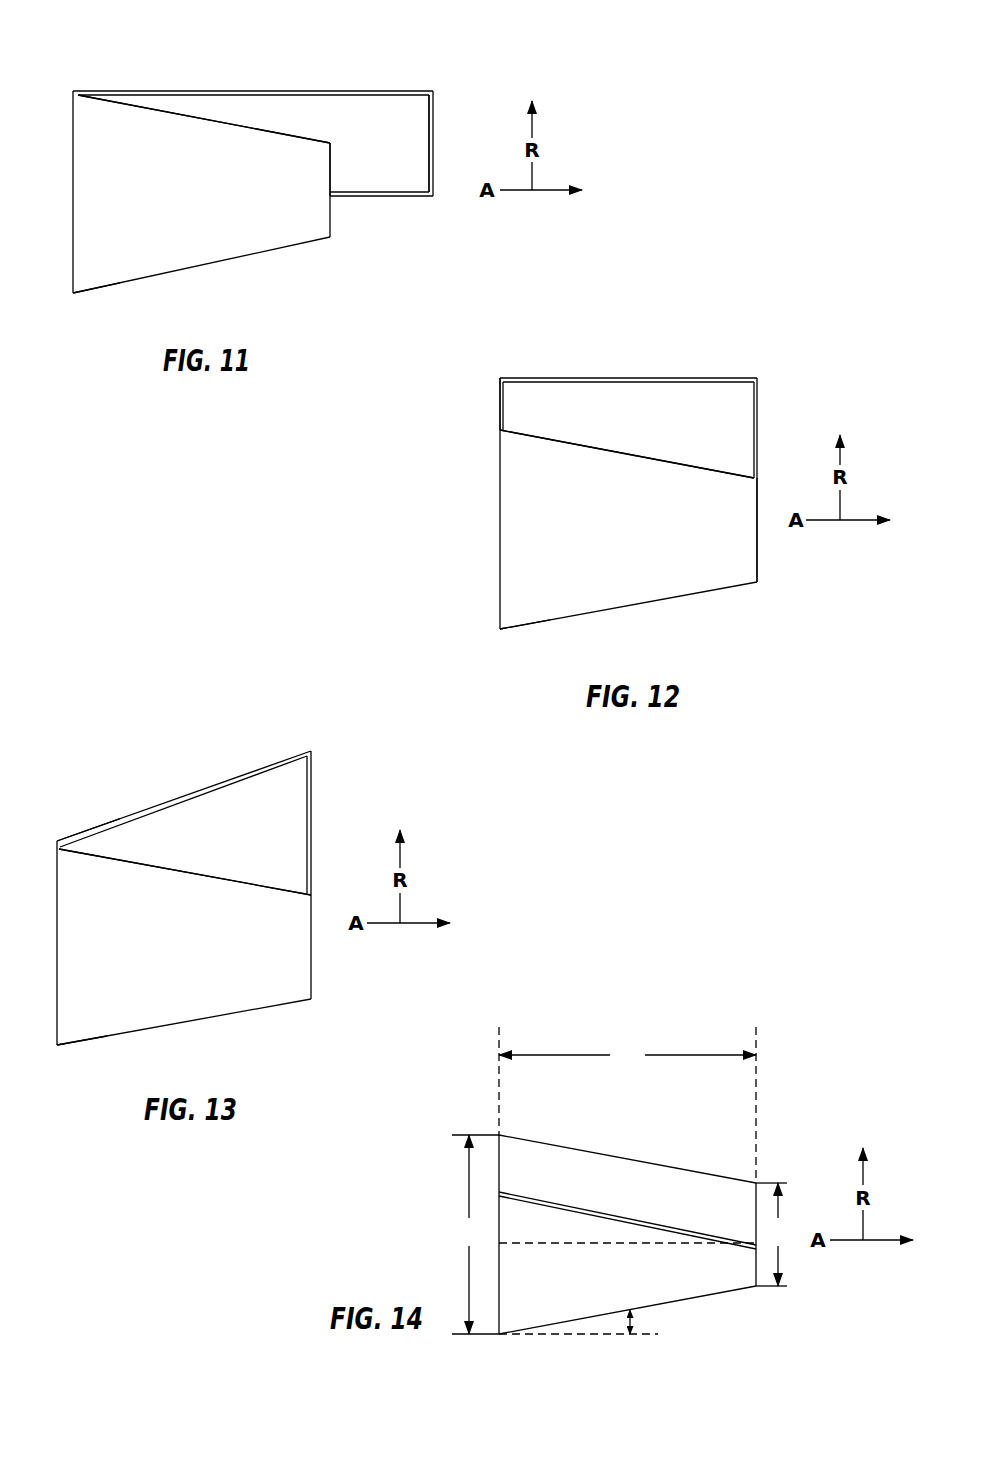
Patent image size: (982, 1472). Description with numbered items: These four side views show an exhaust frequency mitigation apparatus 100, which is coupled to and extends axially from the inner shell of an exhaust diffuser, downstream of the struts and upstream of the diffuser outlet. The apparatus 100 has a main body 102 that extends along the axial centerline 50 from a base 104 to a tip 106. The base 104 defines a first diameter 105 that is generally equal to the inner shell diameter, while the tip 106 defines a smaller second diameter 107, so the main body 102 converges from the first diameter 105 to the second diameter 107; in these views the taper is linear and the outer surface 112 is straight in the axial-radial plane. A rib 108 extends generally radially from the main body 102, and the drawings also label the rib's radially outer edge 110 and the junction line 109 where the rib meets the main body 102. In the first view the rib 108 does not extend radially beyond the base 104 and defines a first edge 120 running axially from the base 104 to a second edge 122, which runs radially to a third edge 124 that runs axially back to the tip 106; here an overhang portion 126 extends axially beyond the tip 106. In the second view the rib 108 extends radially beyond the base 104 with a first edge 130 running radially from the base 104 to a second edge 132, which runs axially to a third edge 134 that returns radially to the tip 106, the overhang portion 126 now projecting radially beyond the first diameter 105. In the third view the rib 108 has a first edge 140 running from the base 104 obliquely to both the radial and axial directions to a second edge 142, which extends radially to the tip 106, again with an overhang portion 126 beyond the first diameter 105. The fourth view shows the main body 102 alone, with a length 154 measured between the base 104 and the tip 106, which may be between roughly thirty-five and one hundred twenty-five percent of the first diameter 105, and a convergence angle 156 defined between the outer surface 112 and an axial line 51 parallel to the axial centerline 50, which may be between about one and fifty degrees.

In FIG. 11, the exhaust frequency mitigation apparatus 100 is at (295, 180).
In FIG. 12, the exhaust frequency mitigation apparatus 100 is at (627, 490).
In FIG. 13, the exhaust frequency mitigation apparatus 100 is at (198, 892).
In FIG. 14, the exhaust frequency mitigation apparatus 100 is at (628, 1200).
In FIG. 11, the main body 102 is at (259, 246).
In FIG. 12, the main body 102 is at (684, 582).
In FIG. 13, the main body 102 is at (241, 999).
In FIG. 14, the main body 102 is at (693, 1278).
In FIG. 11, the base 104 is at (72, 235).
In FIG. 12, the base 104 is at (500, 571).
In FIG. 13, the base 104 is at (57, 990).
In FIG. 14, the base 104 is at (499, 1135).
In FIG. 14, the first diameter 105 is at (475, 1234).
In FIG. 11, the tip 106 is at (330, 235).
In FIG. 12, the tip 106 is at (757, 552).
In FIG. 13, the tip 106 is at (315, 956).
In FIG. 14, the tip 106 is at (756, 1286).
In FIG. 14, the second diameter 107 is at (775, 1234).
In FIG. 11, the rib 108 is at (270, 109).
In FIG. 12, the rib 108 is at (631, 408).
In FIG. 13, the rib 108 is at (193, 823).
In FIG. 14, the rib 108 is at (608, 1213).
In FIG. 11, the interface line 109 is at (161, 109).
In FIG. 12, the interface line 109 is at (650, 459).
In FIG. 13, the interface line 109 is at (241, 882).
In FIG. 11, the outer surface 110 is at (196, 92).
In FIG. 12, the outer surface 110 is at (684, 378).
In FIG. 13, the outer surface 110 is at (252, 771).
In FIG. 11, the outer surface 112 is at (103, 295).
In FIG. 12, the outer surface 112 is at (530, 629).
In FIG. 13, the outer surface 112 is at (87, 1047).
In FIG. 14, the outer surface 112 is at (548, 1140).
In FIG. 11, the first edge 120 is at (360, 91).
In FIG. 11, the second edge 122 is at (433, 149).
In FIG. 11, the third edge 124 is at (413, 196).
In FIG. 11, the overhang portion 126 is at (399, 116).
In FIG. 12, the overhang portion 126 is at (727, 400).
In FIG. 13, the overhang portion 126 is at (281, 775).
In FIG. 12, the first edge 130 is at (500, 410).
In FIG. 12, the second edge 132 is at (556, 378).
In FIG. 12, the third edge 134 is at (757, 426).
In FIG. 13, the first edge 140 is at (113, 819).
In FIG. 13, the second edge 142 is at (315, 830).
In FIG. 14, the length 154 is at (627, 1105).
In FIG. 14, the convergence angle 156 is at (637, 1325).
In FIG. 14, the axial centerline 50 is at (592, 1243).
In FIG. 14, the axial line 51 is at (582, 1334).